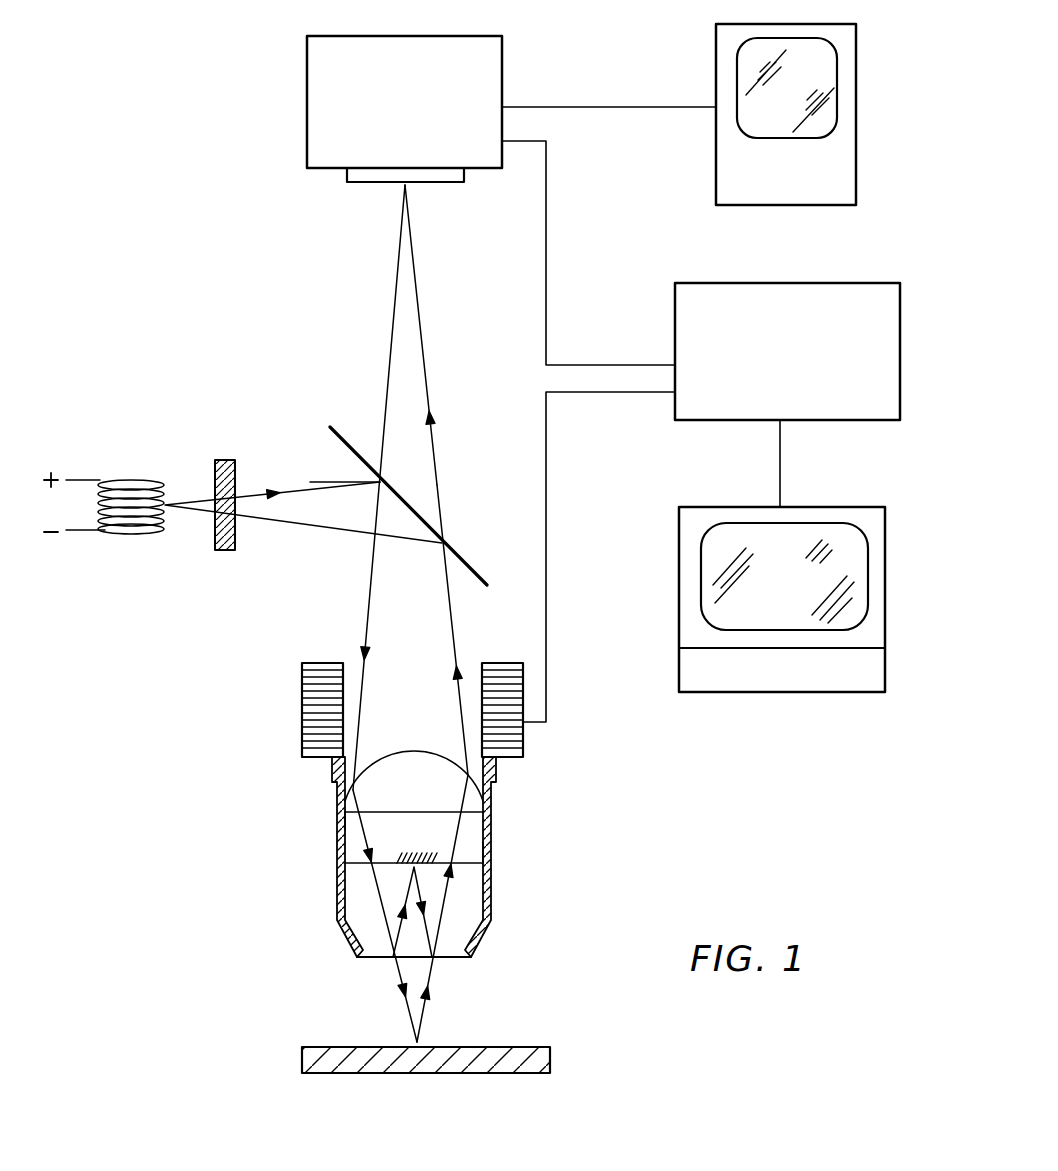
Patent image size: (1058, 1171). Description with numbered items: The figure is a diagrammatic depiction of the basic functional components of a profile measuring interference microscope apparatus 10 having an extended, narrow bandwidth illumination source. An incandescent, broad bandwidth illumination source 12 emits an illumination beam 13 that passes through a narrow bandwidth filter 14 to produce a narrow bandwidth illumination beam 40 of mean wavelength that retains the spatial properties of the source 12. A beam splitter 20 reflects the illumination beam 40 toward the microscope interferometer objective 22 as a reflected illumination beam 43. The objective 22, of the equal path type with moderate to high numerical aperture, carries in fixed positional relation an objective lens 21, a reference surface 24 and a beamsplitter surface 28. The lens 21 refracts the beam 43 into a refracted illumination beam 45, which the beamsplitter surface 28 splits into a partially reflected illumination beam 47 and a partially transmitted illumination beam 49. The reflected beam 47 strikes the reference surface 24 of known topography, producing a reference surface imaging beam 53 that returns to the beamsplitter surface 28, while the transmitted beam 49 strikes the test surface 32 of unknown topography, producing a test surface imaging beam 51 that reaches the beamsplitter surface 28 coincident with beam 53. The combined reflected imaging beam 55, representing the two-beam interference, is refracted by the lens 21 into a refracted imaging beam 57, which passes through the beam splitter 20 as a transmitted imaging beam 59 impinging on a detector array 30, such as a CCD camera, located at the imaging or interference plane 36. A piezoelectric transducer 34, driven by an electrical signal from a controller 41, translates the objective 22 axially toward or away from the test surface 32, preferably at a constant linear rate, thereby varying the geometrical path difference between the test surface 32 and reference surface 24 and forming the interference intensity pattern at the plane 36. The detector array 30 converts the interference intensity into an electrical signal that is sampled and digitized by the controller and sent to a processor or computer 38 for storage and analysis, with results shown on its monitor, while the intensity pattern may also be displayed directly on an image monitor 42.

The profile measuring interference microscope apparatus 10 is at (150, 1022).
The illumination source 12 is at (104, 479).
The illumination beam 13 is at (216, 498).
The narrow bandwidth filter 14 is at (232, 551).
The beam splitter 20 is at (469, 568).
The objective lens 21 is at (420, 782).
The microscope interferometer objective 22 is at (496, 770).
The reference surface 24 is at (408, 855).
The beamsplitter surface 28 is at (373, 958).
The detector array 30 is at (511, 379).
The test surface 32 is at (318, 1060).
The piezoelectric transducer 34 is at (304, 728).
The imaging or interference plane 36 is at (371, 184).
The processor or computer 38 is at (782, 599).
The narrow bandwidth illumination beam 40 is at (310, 481).
The controller 41 is at (787, 395).
The image monitor 42 is at (786, 114).
The reflected illumination beam 43 is at (366, 612).
The refracted illumination beam 45 is at (348, 829).
The partially reflected illumination beam 47 is at (415, 886).
The partially transmitted illumination beam 49 is at (408, 1008).
The test surface imaging beam 51 is at (420, 1036).
The reference surface imaging beam 53 is at (417, 888).
The reflected imaging beam 55 is at (460, 843).
The refracted imaging beam 57 is at (452, 617).
The transmitted imaging beam 59 is at (424, 347).